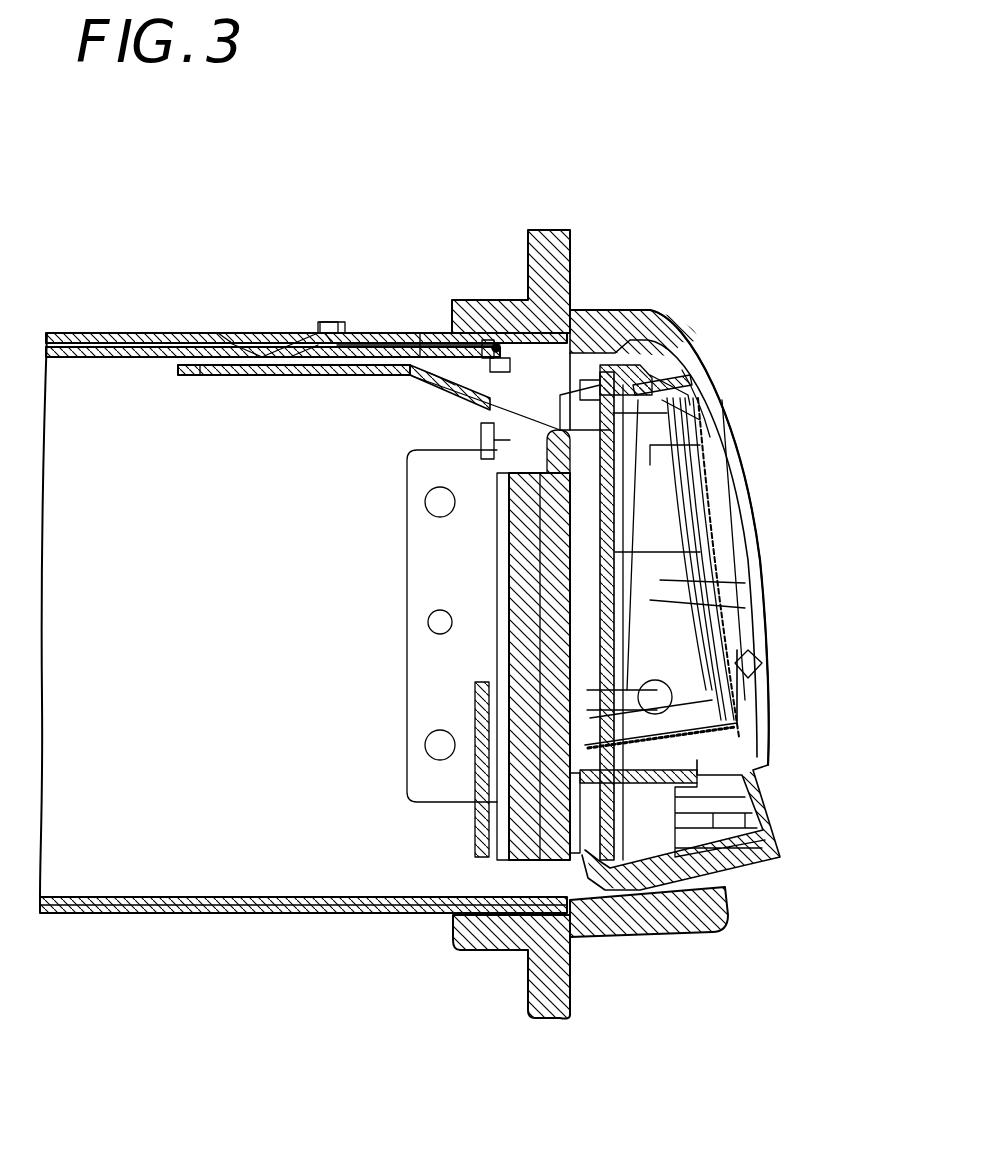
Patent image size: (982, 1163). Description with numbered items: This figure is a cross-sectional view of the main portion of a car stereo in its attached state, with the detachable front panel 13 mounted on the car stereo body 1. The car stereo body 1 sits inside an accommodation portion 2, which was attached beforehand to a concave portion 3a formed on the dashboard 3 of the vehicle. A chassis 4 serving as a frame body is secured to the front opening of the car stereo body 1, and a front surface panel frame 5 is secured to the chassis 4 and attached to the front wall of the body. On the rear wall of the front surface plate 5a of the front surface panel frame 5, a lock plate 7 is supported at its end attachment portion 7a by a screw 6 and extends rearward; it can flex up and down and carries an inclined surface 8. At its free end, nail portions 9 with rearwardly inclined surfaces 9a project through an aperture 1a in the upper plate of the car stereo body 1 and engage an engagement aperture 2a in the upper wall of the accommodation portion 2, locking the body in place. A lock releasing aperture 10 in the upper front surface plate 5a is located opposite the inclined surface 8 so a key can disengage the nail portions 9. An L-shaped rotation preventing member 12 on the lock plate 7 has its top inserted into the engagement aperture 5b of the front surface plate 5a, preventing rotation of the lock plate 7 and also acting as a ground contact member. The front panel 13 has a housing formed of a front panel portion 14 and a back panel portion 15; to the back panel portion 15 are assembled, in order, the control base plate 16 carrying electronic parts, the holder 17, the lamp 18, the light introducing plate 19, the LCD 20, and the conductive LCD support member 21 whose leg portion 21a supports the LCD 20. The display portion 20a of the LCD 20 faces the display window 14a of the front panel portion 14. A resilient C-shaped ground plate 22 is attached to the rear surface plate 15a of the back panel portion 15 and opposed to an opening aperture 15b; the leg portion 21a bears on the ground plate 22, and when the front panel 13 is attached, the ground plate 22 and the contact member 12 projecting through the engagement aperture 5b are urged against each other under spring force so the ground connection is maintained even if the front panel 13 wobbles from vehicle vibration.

The car stereo body 1 is at (427, 333).
The aperture 1a is at (276, 376).
The accommodation portion 2 is at (100, 333).
The engagement aperture 2a is at (336, 327).
The dashboard 3 is at (574, 238).
The concave portion 3a is at (493, 335).
The chassis 4 is at (745, 608).
The front surface panel frame 5 is at (648, 322).
The front surface plate 5a is at (700, 552).
The engagement aperture 5b is at (487, 333).
The screw 6 is at (486, 466).
The lock plate 7 is at (340, 375).
The end attachment portion 7a is at (500, 492).
The inclined surface 8 is at (437, 383).
The nail portion 9 is at (320, 330).
The rearwardly inclined surface 9a is at (312, 326).
The lock releasing aperture 10 is at (693, 380).
The rotation preventing member 12 is at (700, 428).
The front panel 13 is at (783, 350).
The front panel portion 14 is at (717, 390).
The display window 14a is at (750, 663).
The back panel portion 15 is at (604, 350).
The rear surface plate 15a is at (505, 680).
The opening aperture 15b is at (660, 458).
The control base plate 16 is at (605, 548).
The holder 17 is at (600, 592).
The lamp 18 is at (740, 690).
The light introducing plate 19 is at (745, 583).
The LCD 20 is at (683, 353).
The display portion 20a is at (697, 520).
The LCD support member 21 is at (655, 365).
The leg portion 21a is at (481, 438).
The ground plate 22 is at (500, 470).